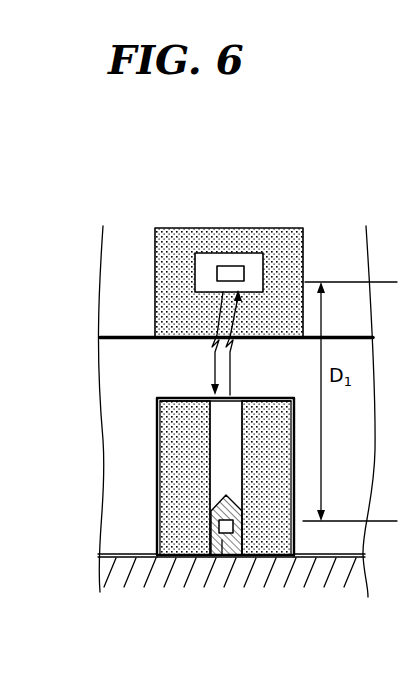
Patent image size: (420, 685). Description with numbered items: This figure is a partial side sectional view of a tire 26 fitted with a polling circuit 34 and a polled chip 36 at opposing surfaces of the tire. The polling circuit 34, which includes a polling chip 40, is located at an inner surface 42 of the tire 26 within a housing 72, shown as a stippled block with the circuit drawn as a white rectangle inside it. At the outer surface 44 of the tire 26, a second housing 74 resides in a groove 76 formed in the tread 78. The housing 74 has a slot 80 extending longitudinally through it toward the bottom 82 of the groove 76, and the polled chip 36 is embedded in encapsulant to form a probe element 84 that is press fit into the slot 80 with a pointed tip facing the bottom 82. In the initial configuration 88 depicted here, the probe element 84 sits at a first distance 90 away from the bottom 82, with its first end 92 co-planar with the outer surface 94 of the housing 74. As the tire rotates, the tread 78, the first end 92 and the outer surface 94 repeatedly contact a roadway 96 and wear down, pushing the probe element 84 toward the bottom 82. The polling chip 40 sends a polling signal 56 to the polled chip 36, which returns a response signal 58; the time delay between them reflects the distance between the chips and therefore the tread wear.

The tire 26 is at (365, 452).
The polling circuit 34 is at (205, 257).
The polled chip 36 is at (233, 527).
The polling chip 40 is at (233, 268).
The inner surface 42 is at (103, 230).
The outer surface 44 is at (108, 593).
The polling signal 56 is at (215, 363).
The response signal 58 is at (233, 363).
The housing 72 is at (168, 228).
The housing 74 is at (185, 463).
The groove 76 is at (300, 523).
The tread 78 is at (115, 521).
The slot 80 is at (226, 468).
The bottom 82 is at (178, 413).
The probe element 84 is at (228, 565).
The initial configuration 88 is at (203, 146).
The first distance 90 is at (357, 365).
The first end 92 is at (222, 555).
The outer surface 94 is at (168, 570).
The roadway 96 is at (108, 556).